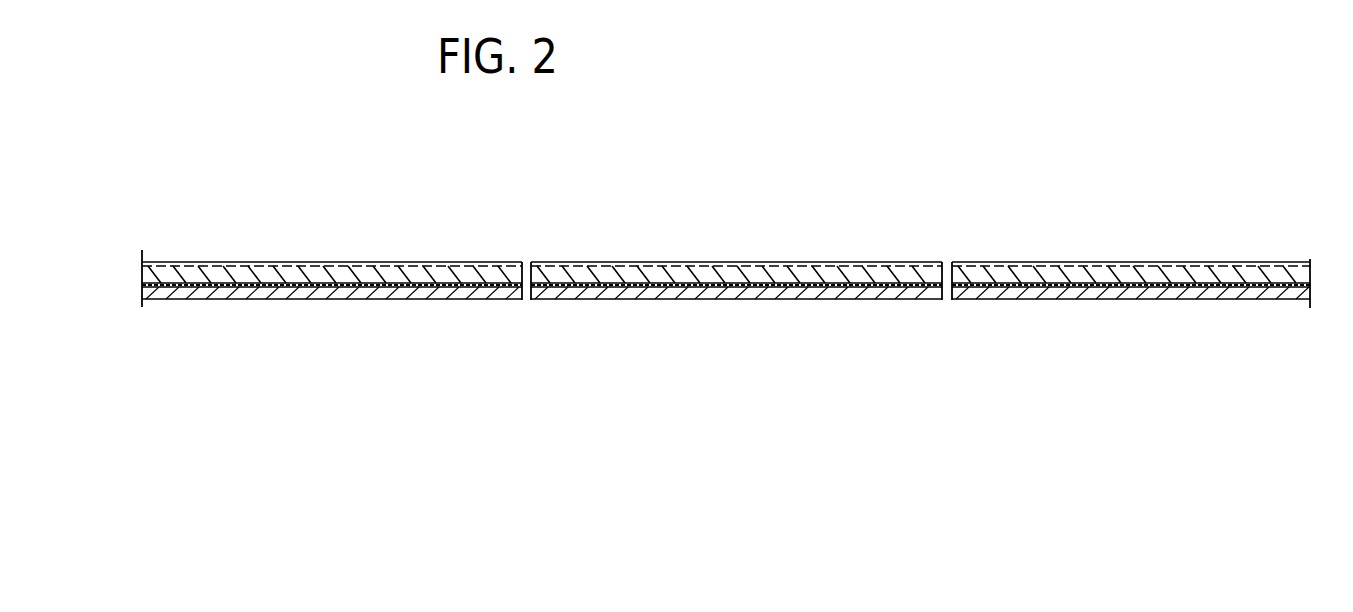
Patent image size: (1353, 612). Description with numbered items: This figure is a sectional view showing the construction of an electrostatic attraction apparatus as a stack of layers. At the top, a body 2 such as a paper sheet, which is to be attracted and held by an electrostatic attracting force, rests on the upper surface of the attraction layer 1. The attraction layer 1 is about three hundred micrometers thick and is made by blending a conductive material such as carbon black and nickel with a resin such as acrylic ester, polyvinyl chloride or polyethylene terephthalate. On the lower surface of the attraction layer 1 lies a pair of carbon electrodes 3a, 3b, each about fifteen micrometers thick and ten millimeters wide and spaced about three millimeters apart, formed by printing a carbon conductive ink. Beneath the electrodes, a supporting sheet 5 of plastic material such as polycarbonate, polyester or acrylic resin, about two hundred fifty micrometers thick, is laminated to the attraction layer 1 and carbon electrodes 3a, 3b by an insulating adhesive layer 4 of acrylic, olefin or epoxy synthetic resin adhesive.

The attraction layer 1 is at (1132, 275).
The body 2 is at (1005, 262).
The carbon electrode 3a is at (222, 283).
The carbon electrode 3b is at (542, 277).
The insulating adhesive layer 4 is at (1177, 283).
The supporting sheet 5 is at (1182, 300).